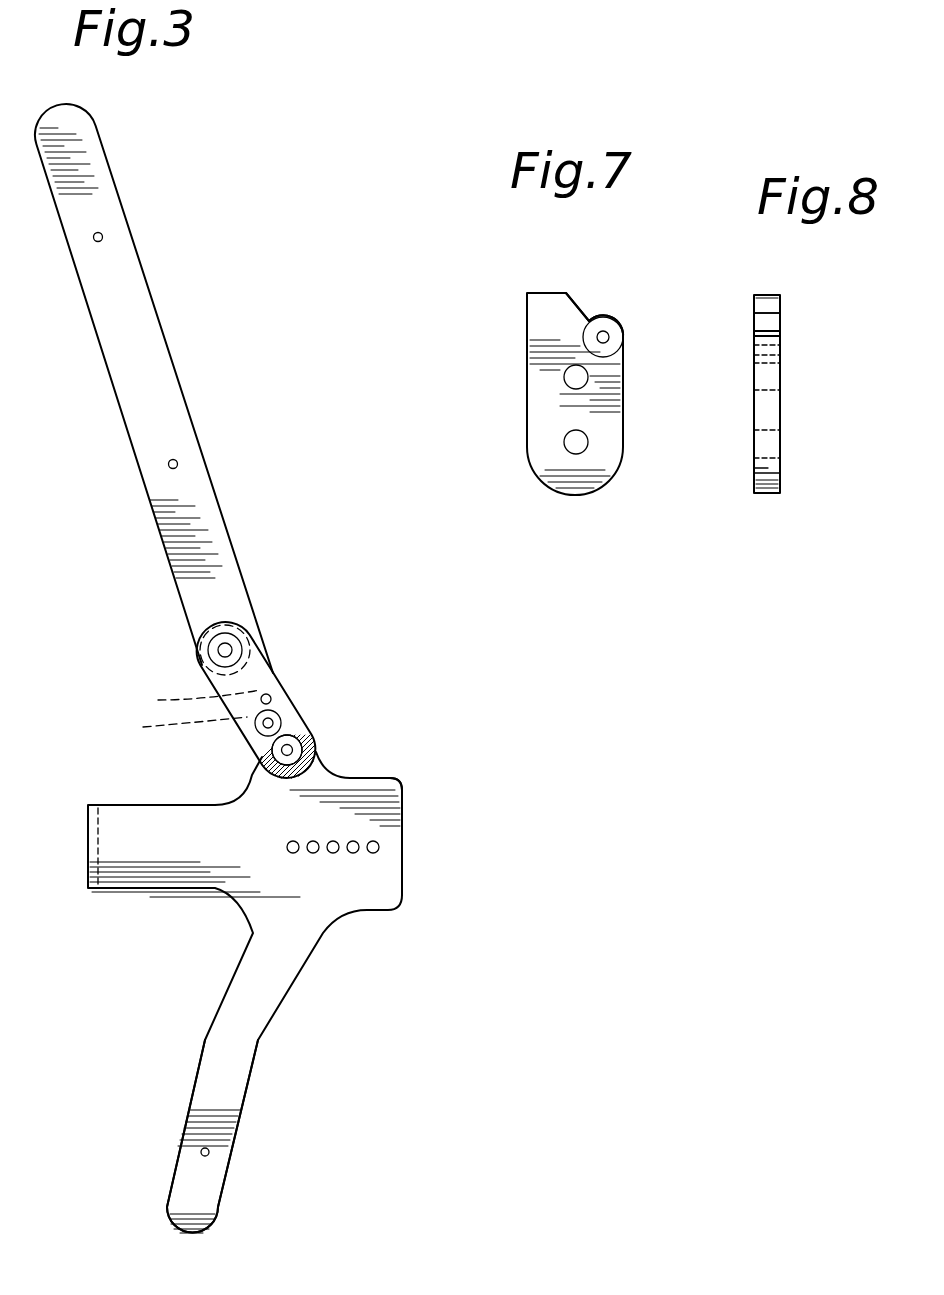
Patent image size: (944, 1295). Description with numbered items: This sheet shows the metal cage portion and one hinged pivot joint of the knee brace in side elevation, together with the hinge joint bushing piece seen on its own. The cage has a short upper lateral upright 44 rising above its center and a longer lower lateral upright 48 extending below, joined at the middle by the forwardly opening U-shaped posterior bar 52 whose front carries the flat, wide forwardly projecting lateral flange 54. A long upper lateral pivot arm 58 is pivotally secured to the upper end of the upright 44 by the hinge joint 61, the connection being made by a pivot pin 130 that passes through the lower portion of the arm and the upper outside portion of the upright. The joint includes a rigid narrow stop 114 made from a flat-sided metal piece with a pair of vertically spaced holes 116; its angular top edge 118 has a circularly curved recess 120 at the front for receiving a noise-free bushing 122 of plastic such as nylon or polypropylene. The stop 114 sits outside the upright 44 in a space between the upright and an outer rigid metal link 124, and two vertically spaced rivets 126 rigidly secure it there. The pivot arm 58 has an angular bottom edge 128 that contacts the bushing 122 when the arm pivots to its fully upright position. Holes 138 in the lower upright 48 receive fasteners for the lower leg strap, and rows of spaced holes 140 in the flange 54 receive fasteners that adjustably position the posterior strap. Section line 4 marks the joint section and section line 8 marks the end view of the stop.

In FIG. 3, the section line 4- 4 is at (312, 1237).
In FIG. 7, the section line 8- 8 is at (645, 501).
In FIG. 3, the upper lateral upright 44 is at (317, 716).
In FIG. 3, the lower lateral upright 48 is at (231, 1098).
In FIG. 3, the U-shaped posterior bar 52 is at (159, 817).
In FIG. 3, the lateral flange 54 is at (404, 813).
In FIG. 3, the upper lateral pivot arm 58 is at (147, 318).
In FIG. 3, the hinge joint 61 is at (253, 674).
In FIG. 3, the stop 114 is at (174, 726).
In FIG. 7, the stop 114 is at (537, 432).
In FIG. 8, the stop 114 is at (780, 480).
In FIG. 7, the holes 116 is at (566, 433).
In FIG. 8, the holes 116 is at (772, 421).
In FIG. 7, the angular top edge 118 is at (579, 309).
In FIG. 8, the angular top edge 118 is at (773, 303).
In FIG. 7, the circularly curved recess 120 is at (592, 320).
In FIG. 3, the noise-free bushing 122 is at (277, 695).
In FIG. 7, the noise-free bushing 122 is at (605, 330).
In FIG. 8, the noise-free bushing 122 is at (777, 330).
In FIG. 3, the outer rigid metal link 124 is at (252, 720).
In FIG. 3, the rivets 126 is at (283, 778).
In FIG. 3, the angular bottom edge 128 is at (182, 700).
In FIG. 3, the pivot pin 130 is at (232, 647).
In FIG. 3, the holes 138 is at (210, 1151).
In FIG. 3, the holes 140 is at (316, 853).